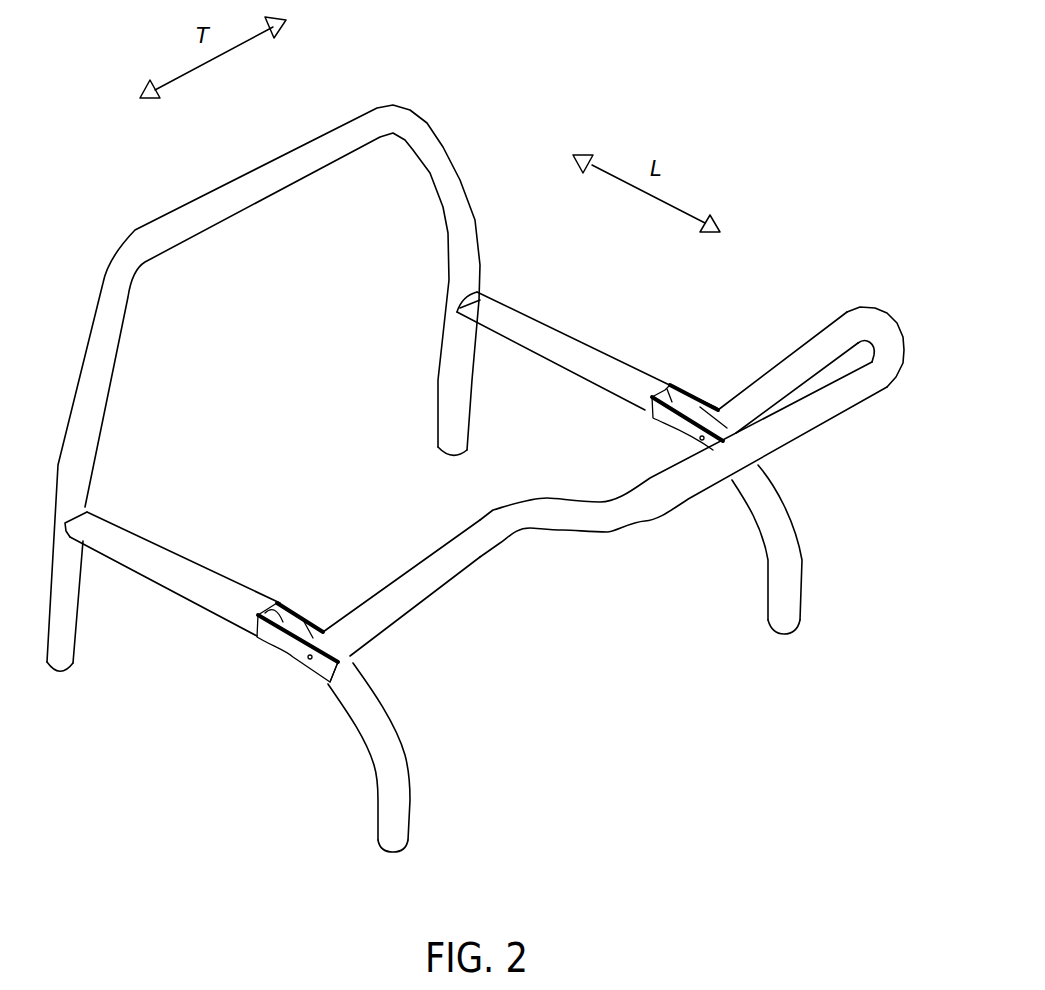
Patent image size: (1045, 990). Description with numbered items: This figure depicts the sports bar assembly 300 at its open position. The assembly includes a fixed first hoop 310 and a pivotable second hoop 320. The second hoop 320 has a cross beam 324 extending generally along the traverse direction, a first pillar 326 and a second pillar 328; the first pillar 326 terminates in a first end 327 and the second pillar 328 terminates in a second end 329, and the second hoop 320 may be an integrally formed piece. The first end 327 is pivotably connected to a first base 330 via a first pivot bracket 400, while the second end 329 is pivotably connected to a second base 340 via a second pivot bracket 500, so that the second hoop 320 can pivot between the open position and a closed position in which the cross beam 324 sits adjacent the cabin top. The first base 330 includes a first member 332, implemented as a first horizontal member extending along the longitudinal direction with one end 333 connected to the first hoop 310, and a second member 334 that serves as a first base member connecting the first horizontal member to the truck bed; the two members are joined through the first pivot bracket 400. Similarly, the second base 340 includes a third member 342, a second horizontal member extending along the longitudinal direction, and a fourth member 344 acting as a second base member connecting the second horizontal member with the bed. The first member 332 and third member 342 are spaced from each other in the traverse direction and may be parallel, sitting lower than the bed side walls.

The sports bar assembly 300 is at (757, 120).
The first hoop 310 is at (252, 166).
The second hoop 320 is at (626, 463).
The cross beam 324 is at (838, 420).
The first pillar 326 is at (770, 374).
The first end 327 is at (723, 427).
The second pillar 328 is at (405, 597).
The second end 329 is at (323, 642).
The first base 330 is at (587, 336).
The first member 332 is at (566, 356).
The end 333 is at (478, 301).
The second member 334 is at (775, 540).
The second base 340 is at (172, 591).
The third member 342 is at (223, 604).
The fourth member 344 is at (384, 775).
The first pivot bracket 400 is at (660, 436).
The second pivot bracket 500 is at (309, 605).